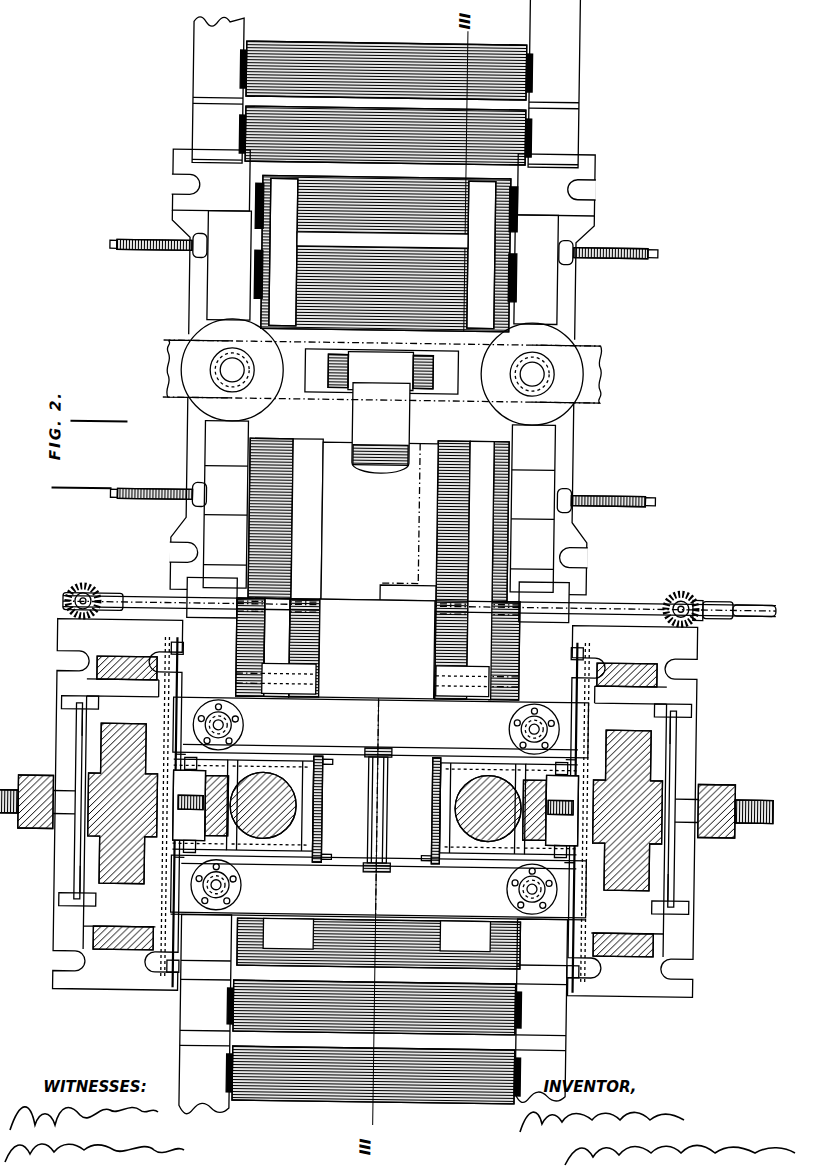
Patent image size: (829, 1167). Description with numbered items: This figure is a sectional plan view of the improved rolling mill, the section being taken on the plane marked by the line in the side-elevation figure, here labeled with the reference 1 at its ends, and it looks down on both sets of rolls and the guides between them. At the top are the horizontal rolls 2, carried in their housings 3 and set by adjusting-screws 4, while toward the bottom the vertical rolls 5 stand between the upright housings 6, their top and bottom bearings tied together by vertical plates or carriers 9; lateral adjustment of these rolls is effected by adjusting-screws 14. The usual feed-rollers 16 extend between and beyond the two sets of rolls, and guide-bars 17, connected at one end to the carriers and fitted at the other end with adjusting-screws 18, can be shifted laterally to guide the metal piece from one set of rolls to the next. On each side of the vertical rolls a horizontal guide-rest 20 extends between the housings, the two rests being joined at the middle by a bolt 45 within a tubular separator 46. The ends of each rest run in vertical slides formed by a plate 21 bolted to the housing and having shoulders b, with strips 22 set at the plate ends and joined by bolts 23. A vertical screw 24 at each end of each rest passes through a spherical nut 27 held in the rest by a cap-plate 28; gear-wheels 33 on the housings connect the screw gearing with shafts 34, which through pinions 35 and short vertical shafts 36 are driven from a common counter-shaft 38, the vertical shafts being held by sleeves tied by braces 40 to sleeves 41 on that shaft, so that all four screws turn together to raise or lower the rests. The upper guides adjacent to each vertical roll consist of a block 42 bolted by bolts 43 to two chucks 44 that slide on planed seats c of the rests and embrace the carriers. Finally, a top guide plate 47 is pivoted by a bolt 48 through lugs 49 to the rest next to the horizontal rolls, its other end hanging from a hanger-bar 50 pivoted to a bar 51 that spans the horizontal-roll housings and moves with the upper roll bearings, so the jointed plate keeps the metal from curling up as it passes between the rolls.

The plates 1 is at (325, 770).
The horizontal rolls 2 is at (418, 325).
The housings of the horizontal rolls 3 is at (380, 402).
The adjusting-screws 4 is at (381, 372).
The vertical rolls 5 is at (376, 807).
The upright housings 6 is at (375, 808).
The vertical plates or carriers 9 is at (375, 808).
The adjusting-screws 14 is at (745, 790).
The feed-rollers 16 is at (480, 565).
The guide-bars 17 is at (383, 437).
The adjusting-screws 18 is at (158, 243).
The guide rests or bars 20 is at (380, 808).
The vertical metal plate 21 is at (370, 815).
The vertical bars or strips 22 is at (166, 680).
The bolts 23 is at (379, 808).
The vertical screw 24 is at (233, 727).
The externally-spherical nut 27 is at (208, 727).
The follower or cap-plate 28 is at (220, 702).
The gear-wheels 33 is at (361, 804).
The shaft 34 is at (76, 768).
The pinions 35 is at (98, 595).
The short vertical shafts 36 is at (711, 608).
The counter-shaft 38 is at (420, 590).
The braces 40 is at (373, 791).
The sleeves 41 is at (55, 597).
The block or casting 42 is at (375, 807).
The bolts 43 is at (373, 806).
The chucks 44 is at (268, 768).
The bolt 45 is at (390, 807).
The tubular separator 46 is at (383, 810).
The top guide bar or plate 47 is at (379, 523).
The bolt 48 is at (365, 645).
The lugs 49 is at (380, 816).
The hanger-bar 50 is at (381, 411).
The bar 51 is at (305, 356).
The vertical guide flanges or shoulders b is at (371, 805).
The horizontal planed slides or seats c is at (376, 809).